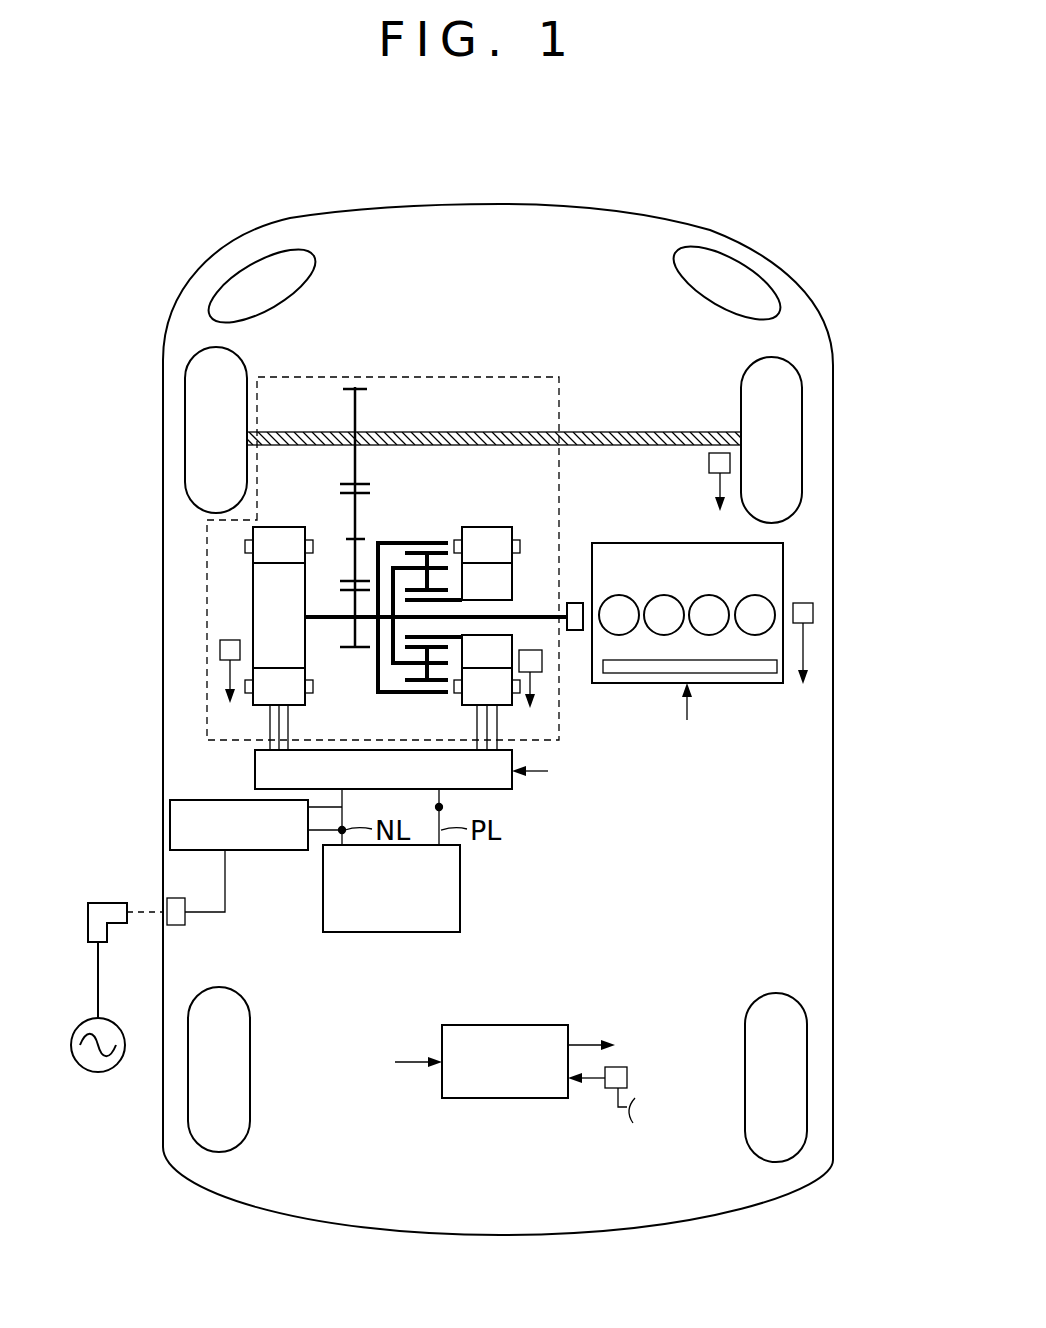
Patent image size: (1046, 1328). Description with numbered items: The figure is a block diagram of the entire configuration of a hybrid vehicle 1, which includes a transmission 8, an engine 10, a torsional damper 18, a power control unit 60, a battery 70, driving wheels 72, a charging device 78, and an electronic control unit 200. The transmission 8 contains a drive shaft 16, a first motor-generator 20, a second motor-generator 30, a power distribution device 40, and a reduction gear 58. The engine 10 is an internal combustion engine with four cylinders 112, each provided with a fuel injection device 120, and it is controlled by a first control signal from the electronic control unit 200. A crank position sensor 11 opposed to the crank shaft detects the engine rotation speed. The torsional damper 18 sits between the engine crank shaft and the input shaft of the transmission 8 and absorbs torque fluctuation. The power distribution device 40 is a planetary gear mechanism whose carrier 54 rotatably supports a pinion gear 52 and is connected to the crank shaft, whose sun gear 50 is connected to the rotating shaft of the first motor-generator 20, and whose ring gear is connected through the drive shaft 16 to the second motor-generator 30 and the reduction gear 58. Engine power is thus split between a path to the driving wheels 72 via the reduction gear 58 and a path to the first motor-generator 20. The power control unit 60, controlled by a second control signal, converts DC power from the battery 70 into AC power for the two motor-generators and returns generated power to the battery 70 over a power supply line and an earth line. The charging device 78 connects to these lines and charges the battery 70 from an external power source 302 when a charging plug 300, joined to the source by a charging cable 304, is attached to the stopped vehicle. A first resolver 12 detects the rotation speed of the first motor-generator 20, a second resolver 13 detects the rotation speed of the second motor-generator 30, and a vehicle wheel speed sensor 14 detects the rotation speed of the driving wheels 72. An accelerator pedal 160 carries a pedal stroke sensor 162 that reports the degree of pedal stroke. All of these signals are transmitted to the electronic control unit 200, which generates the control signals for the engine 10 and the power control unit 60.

The hybrid vehicle 1 is at (477, 190).
The transmission 8 is at (428, 377).
The engine 10 is at (687, 617).
The crank position sensor 11 is at (806, 603).
The first resolver 12 is at (545, 660).
The second resolver 13 is at (220, 650).
The vehicle wheel speed sensor 14 is at (709, 463).
The drive shaft 16 is at (335, 622).
The torsional damper 18 is at (578, 603).
The first motor-generator 20 is at (495, 527).
The second motor-generator 30 is at (283, 527).
The power distribution device 40 is at (442, 526).
The sun gear 50 is at (400, 560).
The pinion gear 52 is at (430, 690).
The carrier 54 is at (388, 692).
The reduction gear 58 is at (355, 386).
The power control unit 60 is at (255, 770).
The battery 70 is at (323, 888).
The driving wheels 72 is at (752, 357).
The charging device 78 is at (170, 826).
The cylinder 112 is at (664, 595).
The fuel injection device 120 is at (735, 676).
The accelerator pedal 160 is at (633, 1112).
The pedal stroke sensor 162 is at (627, 1078).
The electronic control unit 200 is at (533, 1025).
The charging plug 300 is at (107, 902).
The external power source 302 is at (98, 1018).
The charging cable 304 is at (97, 962).